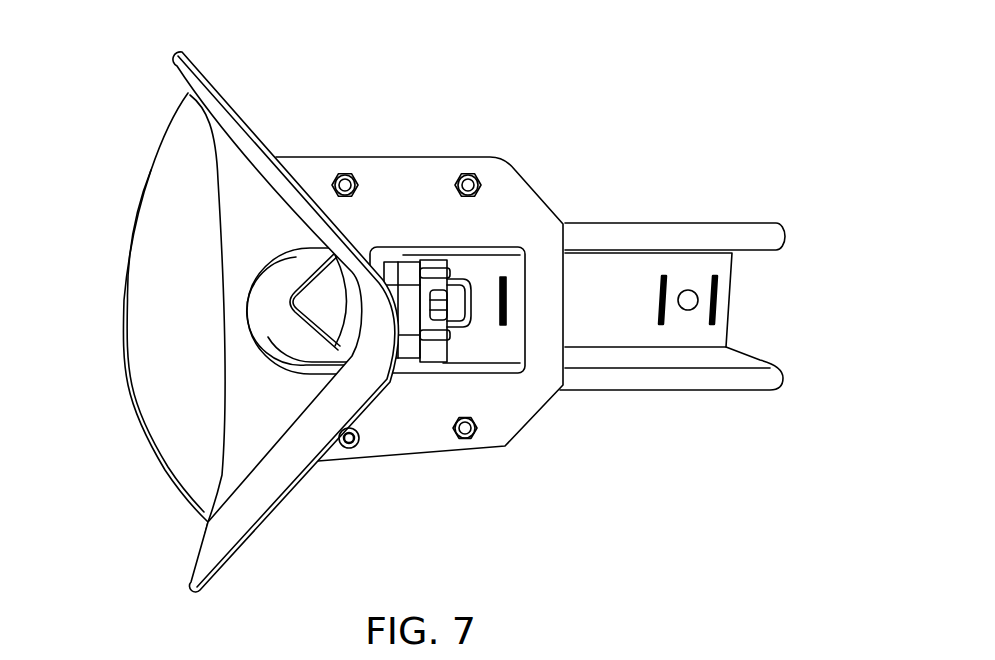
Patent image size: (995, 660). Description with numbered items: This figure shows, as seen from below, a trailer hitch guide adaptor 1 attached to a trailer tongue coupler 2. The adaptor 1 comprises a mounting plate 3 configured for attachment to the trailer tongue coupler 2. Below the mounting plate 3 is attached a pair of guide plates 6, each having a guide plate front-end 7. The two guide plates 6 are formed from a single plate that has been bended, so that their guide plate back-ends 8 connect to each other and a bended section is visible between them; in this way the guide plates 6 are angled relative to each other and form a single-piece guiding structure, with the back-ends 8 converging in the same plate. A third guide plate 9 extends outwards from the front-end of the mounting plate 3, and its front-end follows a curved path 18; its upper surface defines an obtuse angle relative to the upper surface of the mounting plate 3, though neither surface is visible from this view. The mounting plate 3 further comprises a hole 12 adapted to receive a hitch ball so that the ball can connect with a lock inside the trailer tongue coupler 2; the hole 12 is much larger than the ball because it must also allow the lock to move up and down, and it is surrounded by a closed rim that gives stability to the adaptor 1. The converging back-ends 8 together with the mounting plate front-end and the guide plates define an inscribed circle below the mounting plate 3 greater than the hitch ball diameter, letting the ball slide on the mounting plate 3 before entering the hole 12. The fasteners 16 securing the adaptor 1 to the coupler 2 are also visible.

The trailer hitch guide adaptor 1 is at (392, 138).
The trailer tongue coupler 2 is at (702, 222).
The mounting plate 3 is at (523, 202).
The guide plates 6 is at (240, 152).
The guide plate front-end 7 is at (140, 43).
The guide plate back-ends 8 is at (398, 258).
The third guide plate 9 is at (131, 338).
The hole 12 is at (287, 363).
The nut 16 is at (342, 172).
The curved path 18 is at (134, 228).